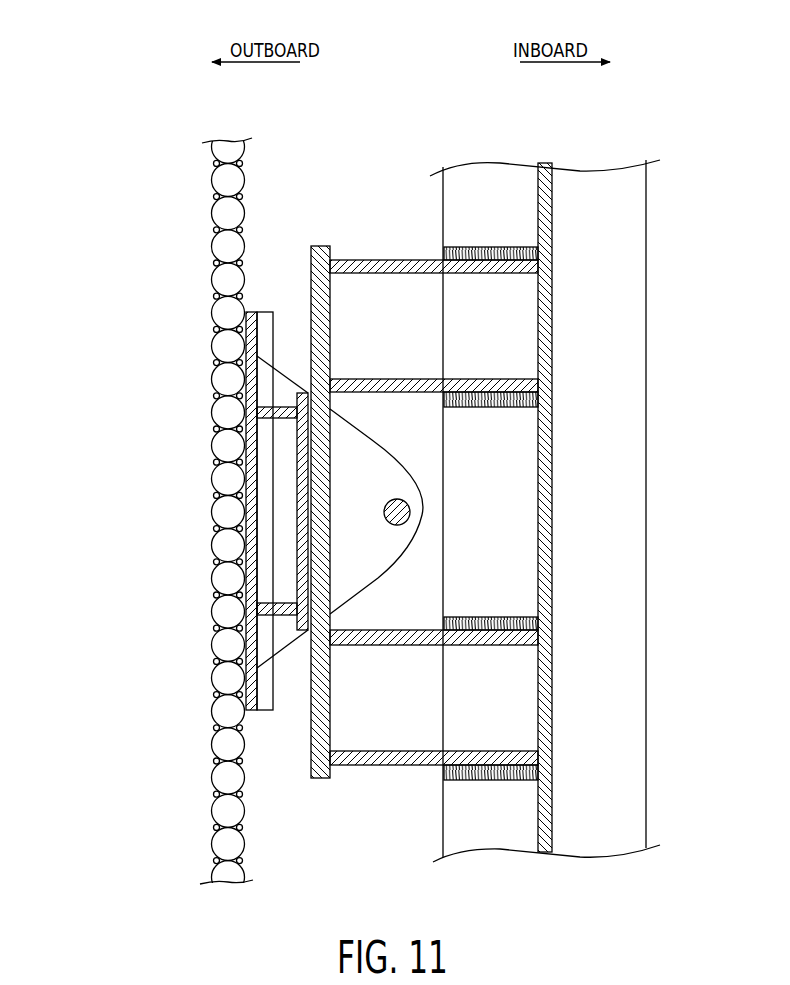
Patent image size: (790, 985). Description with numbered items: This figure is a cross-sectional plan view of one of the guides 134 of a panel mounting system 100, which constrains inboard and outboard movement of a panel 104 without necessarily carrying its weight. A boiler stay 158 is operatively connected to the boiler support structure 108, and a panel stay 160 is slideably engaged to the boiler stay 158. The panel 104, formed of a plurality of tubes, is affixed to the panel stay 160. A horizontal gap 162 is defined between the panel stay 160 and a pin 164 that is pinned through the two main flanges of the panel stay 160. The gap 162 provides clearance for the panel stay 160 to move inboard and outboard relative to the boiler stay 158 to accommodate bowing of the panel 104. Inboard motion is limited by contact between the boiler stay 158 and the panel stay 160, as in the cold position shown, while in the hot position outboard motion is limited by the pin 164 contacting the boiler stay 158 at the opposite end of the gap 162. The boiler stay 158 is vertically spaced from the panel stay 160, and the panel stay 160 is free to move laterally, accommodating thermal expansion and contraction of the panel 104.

The seat assembly 100 is at (291, 495).
The guide 134 is at (147, 240).
The panel 104 is at (208, 163).
The boiler support structure 108 is at (635, 505).
The boiler stay 158 is at (383, 262).
The panel stay 160 is at (251, 316).
The horizontal gap 162 is at (375, 457).
The pin 164 is at (398, 500).